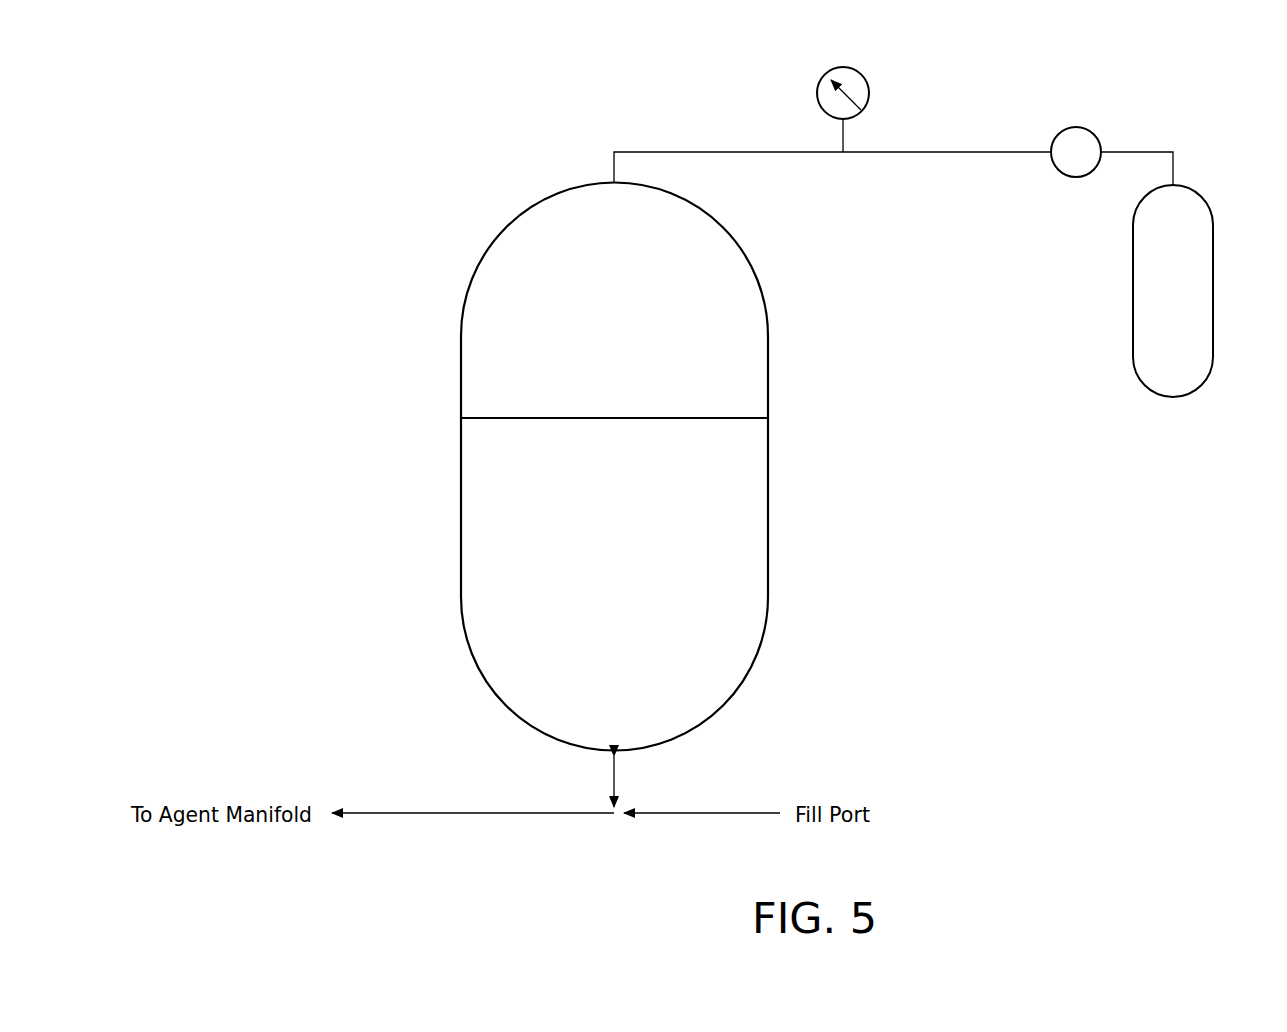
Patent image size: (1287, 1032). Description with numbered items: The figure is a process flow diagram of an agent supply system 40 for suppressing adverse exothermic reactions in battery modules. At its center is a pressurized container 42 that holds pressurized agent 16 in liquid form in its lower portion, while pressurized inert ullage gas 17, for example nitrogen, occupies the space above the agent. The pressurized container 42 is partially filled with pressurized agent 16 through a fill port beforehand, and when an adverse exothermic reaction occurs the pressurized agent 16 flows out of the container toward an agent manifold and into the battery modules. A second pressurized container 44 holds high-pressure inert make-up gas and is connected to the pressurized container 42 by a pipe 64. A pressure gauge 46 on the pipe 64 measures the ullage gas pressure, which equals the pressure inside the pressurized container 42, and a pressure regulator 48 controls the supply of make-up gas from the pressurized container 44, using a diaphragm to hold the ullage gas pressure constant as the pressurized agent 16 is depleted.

The agent supply system 40 is at (452, 189).
The pressurized container 42 is at (760, 284).
The pressurized inert ullage gas 17 is at (472, 334).
The pressurized agent 16 is at (472, 492).
The pressurized container 44 is at (1202, 192).
The pressure gauge 46 is at (855, 70).
The pressure regulator 48 is at (1080, 127).
The pipe 64 is at (908, 153).